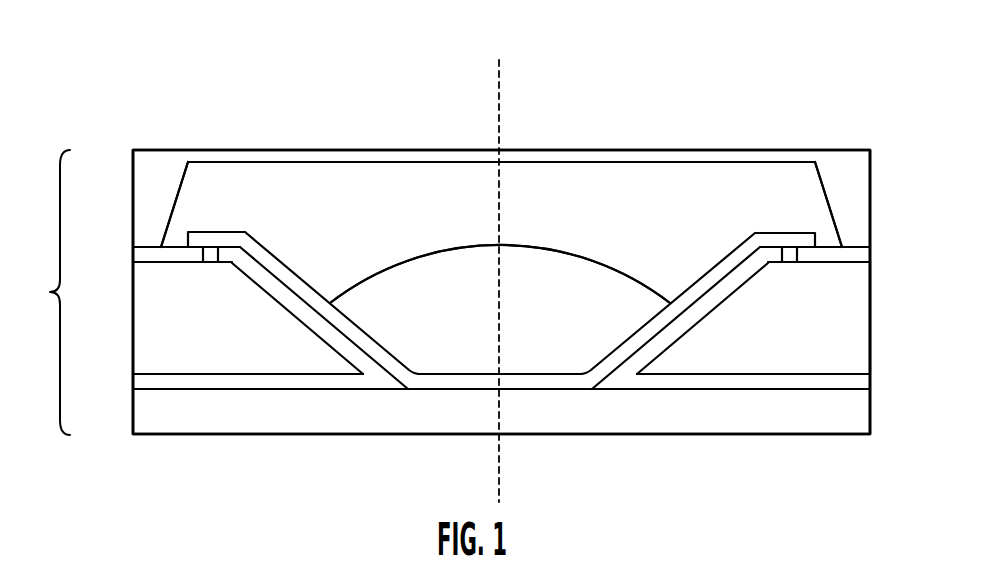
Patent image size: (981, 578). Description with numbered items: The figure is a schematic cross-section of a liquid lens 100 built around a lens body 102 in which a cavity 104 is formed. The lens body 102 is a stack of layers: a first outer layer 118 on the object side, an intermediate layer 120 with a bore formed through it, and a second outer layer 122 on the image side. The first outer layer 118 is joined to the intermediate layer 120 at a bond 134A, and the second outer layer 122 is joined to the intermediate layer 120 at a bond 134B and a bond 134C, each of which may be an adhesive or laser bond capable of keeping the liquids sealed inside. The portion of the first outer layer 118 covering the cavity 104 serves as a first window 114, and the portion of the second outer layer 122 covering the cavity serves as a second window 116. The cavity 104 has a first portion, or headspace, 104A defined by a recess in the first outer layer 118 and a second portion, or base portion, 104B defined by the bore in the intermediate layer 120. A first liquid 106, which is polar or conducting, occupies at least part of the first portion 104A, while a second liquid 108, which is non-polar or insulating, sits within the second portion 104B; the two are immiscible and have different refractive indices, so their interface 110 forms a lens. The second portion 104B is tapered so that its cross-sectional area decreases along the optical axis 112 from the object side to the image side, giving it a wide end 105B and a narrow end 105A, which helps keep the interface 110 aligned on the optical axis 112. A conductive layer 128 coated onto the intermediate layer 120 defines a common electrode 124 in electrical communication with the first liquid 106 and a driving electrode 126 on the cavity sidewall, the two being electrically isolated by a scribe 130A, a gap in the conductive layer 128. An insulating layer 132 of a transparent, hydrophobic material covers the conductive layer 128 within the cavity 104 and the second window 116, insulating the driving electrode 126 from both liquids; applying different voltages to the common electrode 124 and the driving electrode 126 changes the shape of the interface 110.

The liquid lens 100 is at (240, 27).
The lens body 102 is at (43, 292).
The cavity 104 is at (662, 240).
The first portion of cavity 104A is at (787, 183).
The second portion of cavity 104B is at (698, 253).
The narrow end 105A is at (412, 382).
The wide end 105B is at (244, 231).
The first liquid 106 is at (740, 208).
The second liquid 108 is at (603, 280).
The interface 110 is at (464, 248).
The optical axis 112 is at (499, 70).
The first window 114 is at (558, 157).
The second window 116 is at (526, 402).
The first outer layer 118 is at (857, 180).
The intermediate layer 120 is at (857, 314).
The second outer layer 122 is at (857, 412).
The common electrode 124 is at (150, 257).
The driving electrode 126 is at (260, 280).
The conductive layer 128 is at (238, 380).
The scribe 130A is at (210, 258).
The insulating layer 132 is at (457, 378).
The bond 134A is at (857, 247).
The bond 134B is at (665, 390).
The bond 134C is at (805, 382).